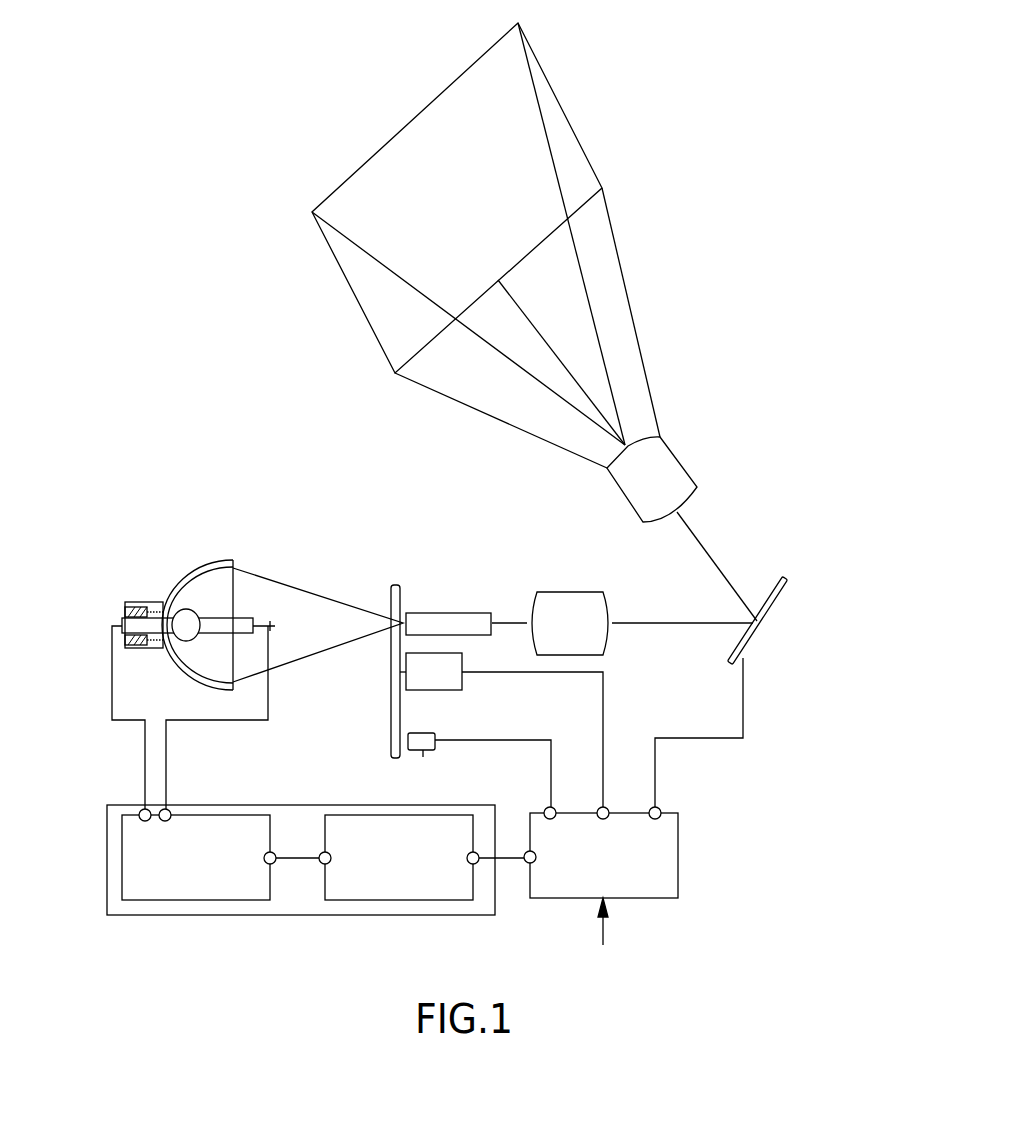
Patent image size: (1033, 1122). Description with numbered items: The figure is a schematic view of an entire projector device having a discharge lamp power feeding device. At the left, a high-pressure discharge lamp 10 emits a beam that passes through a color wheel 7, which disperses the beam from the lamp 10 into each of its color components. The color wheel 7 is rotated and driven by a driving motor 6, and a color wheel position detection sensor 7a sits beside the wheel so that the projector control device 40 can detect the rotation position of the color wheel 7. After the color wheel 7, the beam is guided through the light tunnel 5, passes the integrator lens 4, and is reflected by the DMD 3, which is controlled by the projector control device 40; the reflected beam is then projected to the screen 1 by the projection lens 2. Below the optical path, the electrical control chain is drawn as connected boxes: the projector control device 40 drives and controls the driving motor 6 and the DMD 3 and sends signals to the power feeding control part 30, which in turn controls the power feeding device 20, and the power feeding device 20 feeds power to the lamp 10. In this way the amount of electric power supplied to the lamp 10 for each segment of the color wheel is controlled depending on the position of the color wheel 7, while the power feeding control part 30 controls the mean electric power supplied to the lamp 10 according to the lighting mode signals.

The screen 1 is at (563, 110).
The projection lens 2 is at (670, 447).
The DMD 3 is at (753, 640).
The integrator lens 4 is at (552, 592).
The light tunnel 5 is at (422, 613).
The driving motor 6 is at (432, 690).
The color wheel 7 is at (392, 595).
The color wheel position detection sensor 7a is at (401, 770).
The high-pressure discharge lamp 10 is at (195, 568).
The power feeding device 20 is at (272, 872).
The power feeding control part 30 is at (323, 838).
The projector control device 40 is at (680, 858).